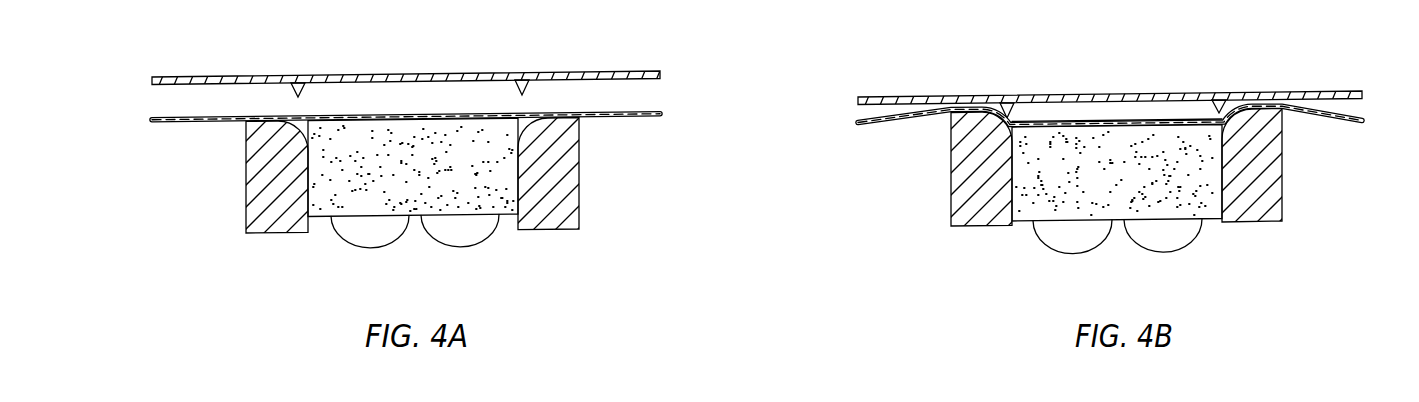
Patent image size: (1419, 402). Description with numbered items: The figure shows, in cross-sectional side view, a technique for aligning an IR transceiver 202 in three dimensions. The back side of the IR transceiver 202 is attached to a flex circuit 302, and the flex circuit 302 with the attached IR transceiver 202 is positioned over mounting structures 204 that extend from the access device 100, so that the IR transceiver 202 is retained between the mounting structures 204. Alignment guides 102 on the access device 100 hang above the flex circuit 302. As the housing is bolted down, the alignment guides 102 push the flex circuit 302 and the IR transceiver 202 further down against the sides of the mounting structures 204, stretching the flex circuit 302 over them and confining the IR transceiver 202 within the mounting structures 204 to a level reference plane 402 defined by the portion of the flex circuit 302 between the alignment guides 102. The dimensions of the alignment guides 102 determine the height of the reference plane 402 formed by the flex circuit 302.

In FIG. 4A, the access device 100 is at (658, 72).
In FIG. 4B, the access device 100 is at (1360, 92).
In FIG. 4A, the alignment guides 102 is at (298, 96).
In FIG. 4B, the alignment guides 102 is at (1005, 106).
In FIG. 4A, the IR transceiver 202 is at (497, 233).
In FIG. 4B, the IR transceiver 202 is at (1208, 215).
In FIG. 4A, the mounting structures 204 is at (246, 228).
In FIG. 4B, the mounting structures 204 is at (951, 220).
In FIG. 4A, the flex circuit 302 is at (152, 123).
In FIG. 4B, the flex circuit 302 is at (872, 126).
In FIG. 4B, the reference plane 402 is at (1112, 121).